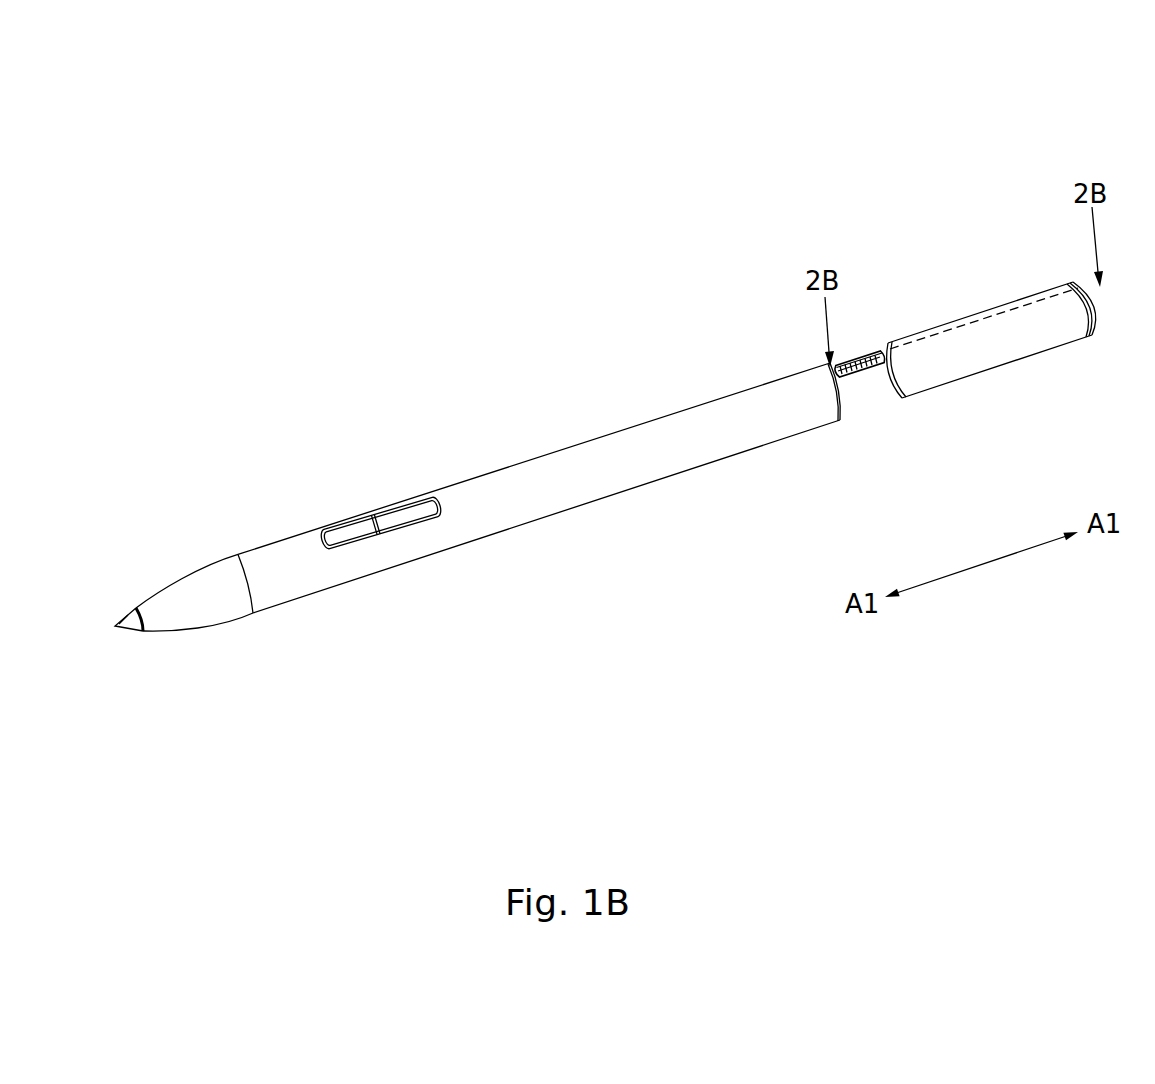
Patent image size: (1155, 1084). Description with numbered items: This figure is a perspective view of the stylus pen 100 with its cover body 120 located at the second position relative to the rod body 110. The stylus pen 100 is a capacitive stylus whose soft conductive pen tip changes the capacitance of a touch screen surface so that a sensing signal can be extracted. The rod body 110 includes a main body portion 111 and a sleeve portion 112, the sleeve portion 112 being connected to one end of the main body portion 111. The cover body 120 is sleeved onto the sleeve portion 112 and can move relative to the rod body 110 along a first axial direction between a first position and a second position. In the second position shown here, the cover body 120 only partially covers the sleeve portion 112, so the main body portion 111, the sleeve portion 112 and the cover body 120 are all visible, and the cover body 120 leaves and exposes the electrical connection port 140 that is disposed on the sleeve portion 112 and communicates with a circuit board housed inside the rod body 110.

The stylus pen 100 is at (1123, 102).
The rod body 110 is at (893, 220).
The main body portion 111 is at (771, 393).
The sleeve portion 112 is at (879, 345).
The cover body 120 is at (980, 317).
The electrical connection port 140 is at (880, 390).